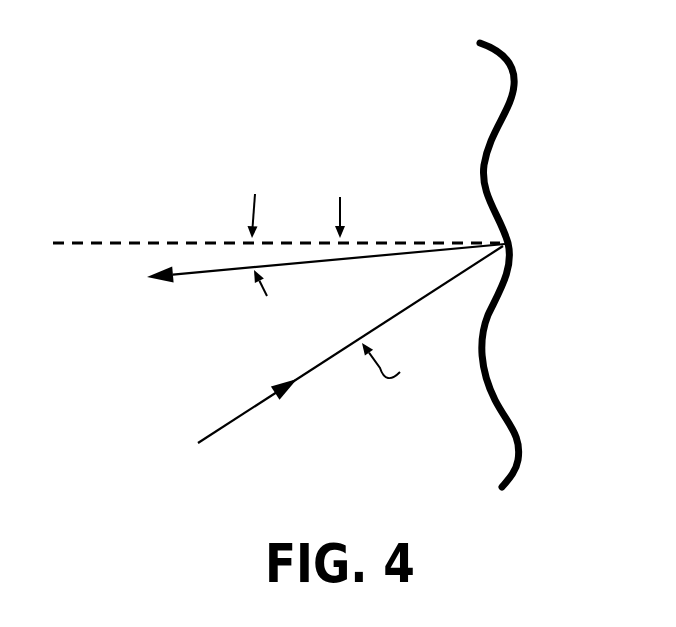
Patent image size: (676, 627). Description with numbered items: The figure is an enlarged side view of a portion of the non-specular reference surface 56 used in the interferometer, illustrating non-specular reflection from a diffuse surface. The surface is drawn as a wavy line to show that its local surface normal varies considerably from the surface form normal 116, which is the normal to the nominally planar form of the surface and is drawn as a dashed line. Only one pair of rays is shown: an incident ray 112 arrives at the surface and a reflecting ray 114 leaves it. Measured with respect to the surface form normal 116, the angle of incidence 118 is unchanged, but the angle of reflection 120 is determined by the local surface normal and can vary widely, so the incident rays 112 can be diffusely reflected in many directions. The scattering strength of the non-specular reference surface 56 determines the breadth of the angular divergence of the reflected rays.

The non-specular reference surface 56 is at (485, 140).
The incident ray 112 is at (252, 414).
The reflecting ray 114 is at (210, 275).
The surface form normal 116 is at (118, 246).
The angle of incidence 118 is at (404, 365).
The angle of reflection 120 is at (256, 210).